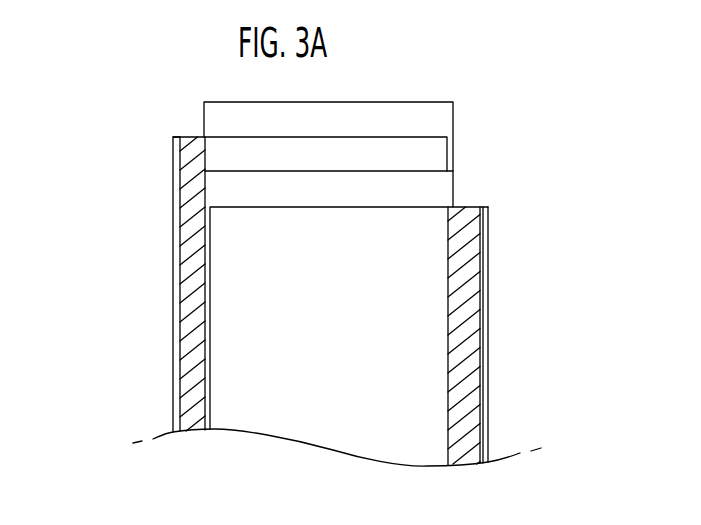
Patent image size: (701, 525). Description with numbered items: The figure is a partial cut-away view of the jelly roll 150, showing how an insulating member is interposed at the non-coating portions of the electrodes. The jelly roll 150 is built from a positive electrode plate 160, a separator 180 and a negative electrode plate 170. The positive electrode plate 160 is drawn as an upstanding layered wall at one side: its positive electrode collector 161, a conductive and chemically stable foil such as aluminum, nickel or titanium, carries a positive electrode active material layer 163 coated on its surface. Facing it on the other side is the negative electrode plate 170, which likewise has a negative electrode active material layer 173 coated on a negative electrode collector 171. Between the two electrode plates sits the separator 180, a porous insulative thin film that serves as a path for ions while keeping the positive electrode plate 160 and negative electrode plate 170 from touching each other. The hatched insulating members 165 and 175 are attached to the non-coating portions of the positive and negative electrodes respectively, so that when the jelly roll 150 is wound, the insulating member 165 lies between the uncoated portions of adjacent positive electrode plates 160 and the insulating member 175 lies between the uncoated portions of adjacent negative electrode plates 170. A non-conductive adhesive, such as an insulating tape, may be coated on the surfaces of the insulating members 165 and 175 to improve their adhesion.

The jelly roll 150 is at (128, 326).
The positive electrode plate 160 is at (103, 125).
The positive electrode collector 161 is at (165, 187).
The positive electrode active material layer 163 is at (223, 148).
The insulating member 165 is at (190, 393).
The negative electrode plate 170 is at (563, 210).
The negative electrode collector 171 is at (498, 227).
The negative electrode active material layer 173 is at (427, 280).
The insulating member 175 is at (470, 317).
The separator 180 is at (447, 190).